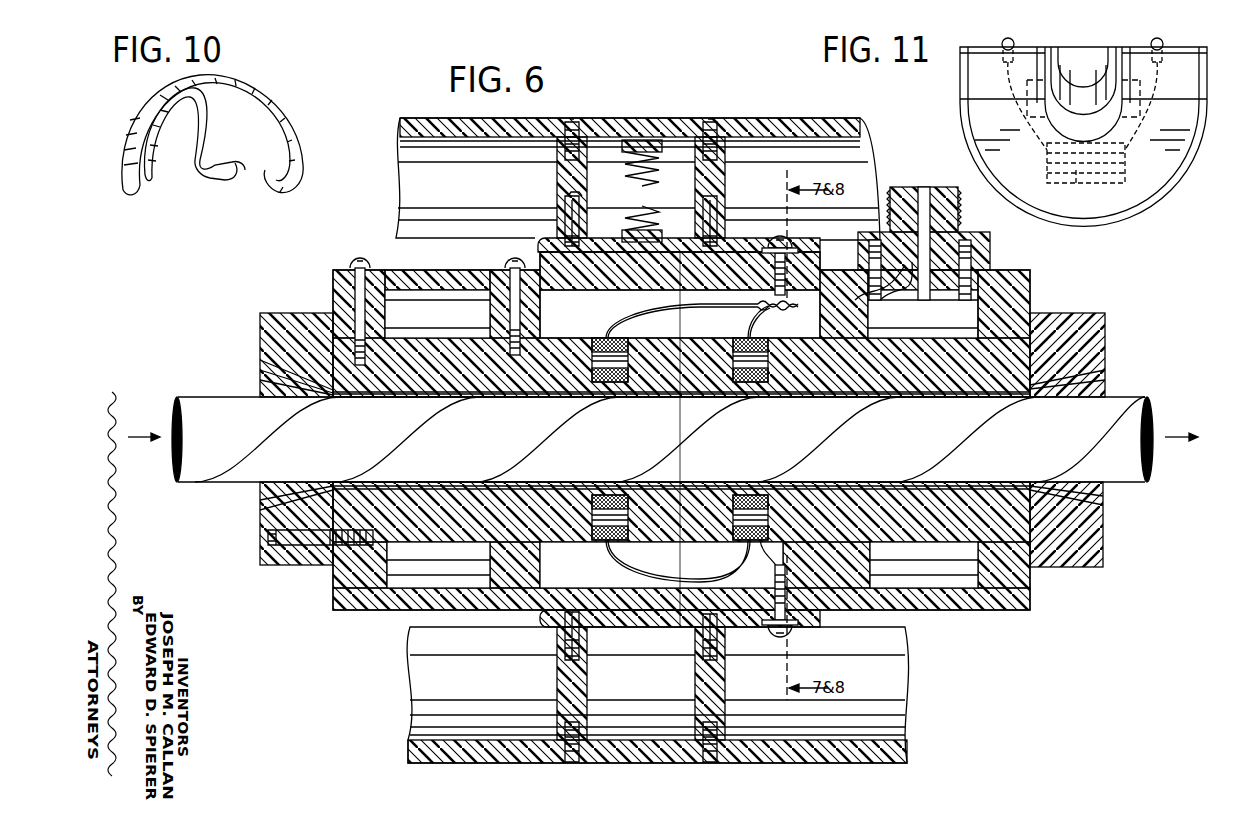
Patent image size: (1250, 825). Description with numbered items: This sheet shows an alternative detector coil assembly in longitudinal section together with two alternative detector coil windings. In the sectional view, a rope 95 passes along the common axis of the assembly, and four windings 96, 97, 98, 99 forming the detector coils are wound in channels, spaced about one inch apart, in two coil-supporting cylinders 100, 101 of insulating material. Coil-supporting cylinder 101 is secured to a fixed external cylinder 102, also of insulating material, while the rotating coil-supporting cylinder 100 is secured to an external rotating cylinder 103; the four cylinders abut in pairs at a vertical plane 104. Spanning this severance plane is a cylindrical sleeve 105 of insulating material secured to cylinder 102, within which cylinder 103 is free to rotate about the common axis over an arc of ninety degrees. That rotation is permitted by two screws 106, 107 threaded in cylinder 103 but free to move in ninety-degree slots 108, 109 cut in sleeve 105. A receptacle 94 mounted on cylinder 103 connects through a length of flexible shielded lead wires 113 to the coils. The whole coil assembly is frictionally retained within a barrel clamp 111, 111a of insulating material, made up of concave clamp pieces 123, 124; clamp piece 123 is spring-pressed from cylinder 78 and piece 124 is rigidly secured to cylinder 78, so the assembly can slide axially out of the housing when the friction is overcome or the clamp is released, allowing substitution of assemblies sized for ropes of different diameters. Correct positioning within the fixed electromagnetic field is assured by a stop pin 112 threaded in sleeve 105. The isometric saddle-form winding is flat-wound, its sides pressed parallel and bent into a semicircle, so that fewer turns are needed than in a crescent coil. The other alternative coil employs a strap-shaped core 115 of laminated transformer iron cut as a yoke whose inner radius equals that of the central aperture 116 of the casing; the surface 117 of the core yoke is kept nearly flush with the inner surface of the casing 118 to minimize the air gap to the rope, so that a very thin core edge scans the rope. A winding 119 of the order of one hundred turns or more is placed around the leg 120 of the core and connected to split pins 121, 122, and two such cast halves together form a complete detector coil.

In FIG. 6, the cylinder 78 is at (585, 130).
In FIG. 6, the receptacle 94 is at (956, 190).
In FIG. 6, the shaft 95 is at (220, 410).
In FIG. 6, the winding 96 is at (768, 338).
In FIG. 6, the winding 97 is at (740, 540).
In FIG. 6, the winding 98 is at (605, 338).
In FIG. 6, the winding 99 is at (605, 540).
In FIG. 6, the rotating coil-supporting cylinder 100 is at (897, 348).
In FIG. 6, the coil-supporting cylinder 101 is at (450, 340).
In FIG. 6, the fixed external cylinder 102 is at (432, 270).
In FIG. 6, the external rotating cylinder 103 is at (998, 270).
In FIG. 6, the vertical plane 104 is at (708, 487).
In FIG. 6, the cylindrical sleeve 105 is at (543, 616).
In FIG. 6, the screw 106 is at (782, 236).
In FIG. 6, the screw 107 is at (797, 634).
In FIG. 6, the slot 108 is at (800, 249).
In FIG. 6, the slot 109 is at (812, 624).
In FIG. 6, the barrel clamp 111 is at (733, 208).
In FIG. 6, the barrel clamp 111a is at (550, 679).
In FIG. 6, the stop pin 112 is at (732, 652).
In FIG. 6, the flexible shielded lead wires 113 is at (904, 286).
In FIG. 11, the strap-shaped core 115 is at (1140, 117).
In FIG. 11, the central aperture 116 is at (1090, 59).
In FIG. 11, the surface 117 is at (1072, 108).
In FIG. 11, the casing 118 is at (978, 83).
In FIG. 11, the winding 119 is at (1125, 170).
In FIG. 11, the leg 120 is at (1076, 185).
In FIG. 11, the split pin 121 is at (1007, 41).
In FIG. 11, the split pin 122 is at (1161, 41).
In FIG. 6, the clamp piece 123 is at (557, 235).
In FIG. 6, the clamp piece 124 is at (557, 639).